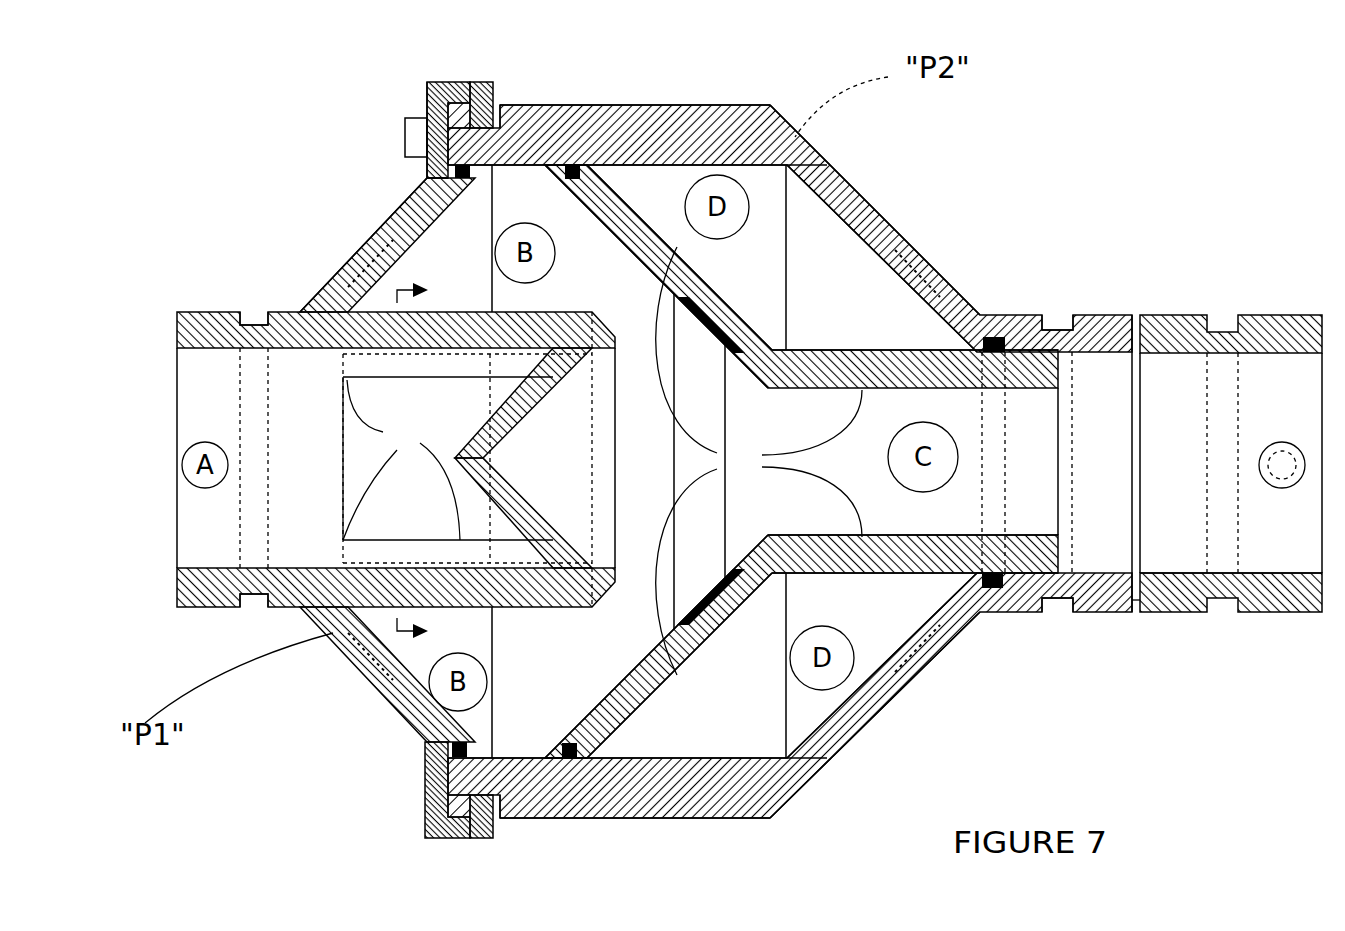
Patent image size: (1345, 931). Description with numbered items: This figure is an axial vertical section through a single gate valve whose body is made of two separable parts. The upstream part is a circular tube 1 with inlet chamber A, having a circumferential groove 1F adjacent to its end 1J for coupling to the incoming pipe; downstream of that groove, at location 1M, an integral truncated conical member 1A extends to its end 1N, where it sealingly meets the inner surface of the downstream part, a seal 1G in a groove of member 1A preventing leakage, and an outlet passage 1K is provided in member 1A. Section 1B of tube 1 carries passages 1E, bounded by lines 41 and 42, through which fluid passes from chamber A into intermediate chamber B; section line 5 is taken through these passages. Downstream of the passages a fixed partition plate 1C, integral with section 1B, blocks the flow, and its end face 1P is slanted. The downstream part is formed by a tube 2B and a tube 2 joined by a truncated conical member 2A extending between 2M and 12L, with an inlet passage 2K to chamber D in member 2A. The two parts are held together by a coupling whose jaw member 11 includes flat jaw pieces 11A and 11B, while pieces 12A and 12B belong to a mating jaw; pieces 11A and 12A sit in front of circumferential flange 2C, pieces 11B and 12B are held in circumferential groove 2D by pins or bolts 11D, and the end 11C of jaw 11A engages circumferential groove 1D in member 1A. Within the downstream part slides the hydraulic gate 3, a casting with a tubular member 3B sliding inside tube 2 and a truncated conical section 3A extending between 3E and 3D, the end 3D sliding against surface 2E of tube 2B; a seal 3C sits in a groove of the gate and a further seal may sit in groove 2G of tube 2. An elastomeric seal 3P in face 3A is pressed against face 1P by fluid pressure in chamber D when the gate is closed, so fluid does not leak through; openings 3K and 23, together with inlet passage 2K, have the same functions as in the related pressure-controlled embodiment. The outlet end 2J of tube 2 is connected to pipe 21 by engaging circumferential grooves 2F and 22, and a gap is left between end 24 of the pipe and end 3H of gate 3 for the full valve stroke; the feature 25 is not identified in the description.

The circular tube 1 is at (177, 580).
The truncated conical member 1A is at (338, 280).
The section of tube 1B is at (515, 607).
The fixed partition plate 1C is at (575, 380).
The circumferential groove 1D is at (395, 228).
The passages 1E is at (423, 380).
The circumferential groove 1F is at (250, 313).
The seal 1G is at (466, 180).
The end of tube 1J is at (177, 346).
The outlet passage 1K is at (350, 262).
The location on tube 1M is at (333, 350).
The end of conical member 1N is at (520, 165).
The end face of partition plate 1P is at (618, 322).
The outlet tube 2 is at (1088, 612).
The truncated conical member 2A is at (893, 232).
The tube 2B is at (677, 110).
The circumferential flange 2C is at (462, 103).
The circumferential groove 2D is at (498, 107).
The inner surface of tube 2E is at (540, 167).
The circumferential groove 2F is at (1055, 607).
The seal groove 2G is at (992, 337).
The outlet end of tube 2J is at (1132, 315).
The inlet passage 2K is at (940, 280).
The location on body 2M is at (990, 315).
The hydraulic gate 3 is at (718, 455).
The truncated conical section of gate 3A is at (603, 232).
The tubular member of gate 3B is at (880, 540).
The seal 3C is at (575, 185).
The end of conical section 3D is at (582, 170).
The junction of gate members 3E is at (772, 352).
The end of gate 3H is at (1058, 538).
The opening 3K is at (667, 246).
The elastomeric seal 3P is at (718, 338).
The section line 5 is at (423, 461).
The jaw member 11 is at (428, 98).
The flat jaw piece 11A is at (432, 113).
The flat jaw piece 11B is at (481, 110).
The end of jaw 11C is at (448, 178).
The pin or bolt 11D is at (405, 137).
The flat jaw piece 12A is at (423, 797).
The flat jaw piece 12B is at (480, 837).
The location on body 12L is at (835, 183).
The outlet pipe 21 is at (1280, 590).
The circumferential groove 22 is at (1222, 613).
The opening 23 is at (1282, 462).
The end of pipe 24 is at (1141, 315).
The gap 25 is at (1136, 612).
The passage boundary 41 is at (470, 356).
The passage boundary 42 is at (405, 560).